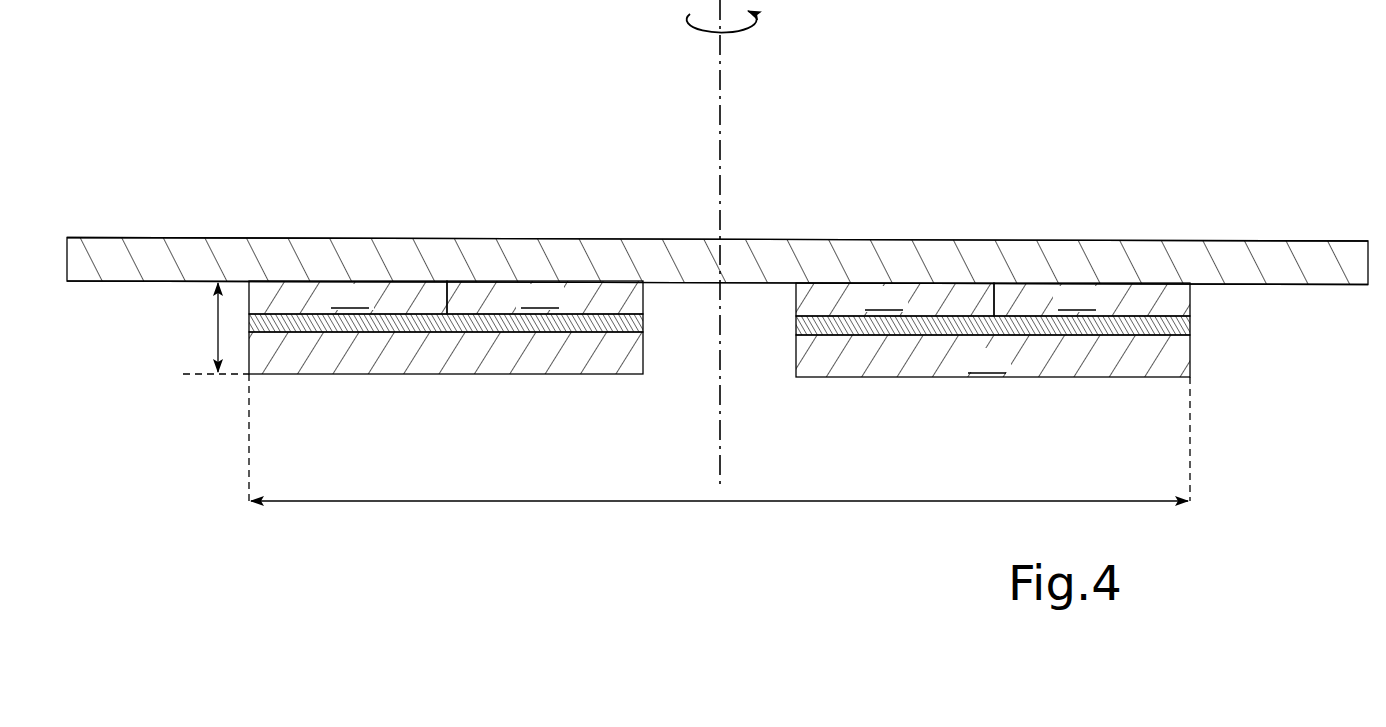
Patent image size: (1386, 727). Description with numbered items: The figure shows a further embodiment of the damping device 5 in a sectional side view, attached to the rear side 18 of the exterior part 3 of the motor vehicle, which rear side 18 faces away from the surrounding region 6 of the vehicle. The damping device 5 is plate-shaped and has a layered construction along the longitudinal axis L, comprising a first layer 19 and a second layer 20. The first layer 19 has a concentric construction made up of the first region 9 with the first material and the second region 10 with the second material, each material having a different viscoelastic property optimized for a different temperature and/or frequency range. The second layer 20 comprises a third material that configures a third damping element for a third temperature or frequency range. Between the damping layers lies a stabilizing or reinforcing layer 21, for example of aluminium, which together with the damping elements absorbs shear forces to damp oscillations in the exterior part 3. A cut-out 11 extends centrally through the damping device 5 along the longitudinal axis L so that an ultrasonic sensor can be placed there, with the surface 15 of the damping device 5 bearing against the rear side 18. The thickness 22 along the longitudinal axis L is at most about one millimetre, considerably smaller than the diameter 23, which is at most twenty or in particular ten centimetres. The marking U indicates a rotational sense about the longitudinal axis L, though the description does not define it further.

The exterior part 3 is at (1234, 252).
The damping device 5 is at (393, 310).
The surrounding region 6 is at (470, 149).
The first region 9 is at (605, 279).
The second region 10 is at (311, 279).
The cut-out 11 is at (687, 342).
The surface 15 is at (1044, 281).
The rear side 18 is at (130, 283).
The first layer 19 is at (1170, 303).
The second layer 20 is at (1159, 358).
The reinforcing layer 21 is at (365, 318).
The thickness 22 is at (216, 326).
The diameter 23 is at (550, 503).
The direction of rotation U is at (755, 21).
The longitudinal axis L is at (720, 95).